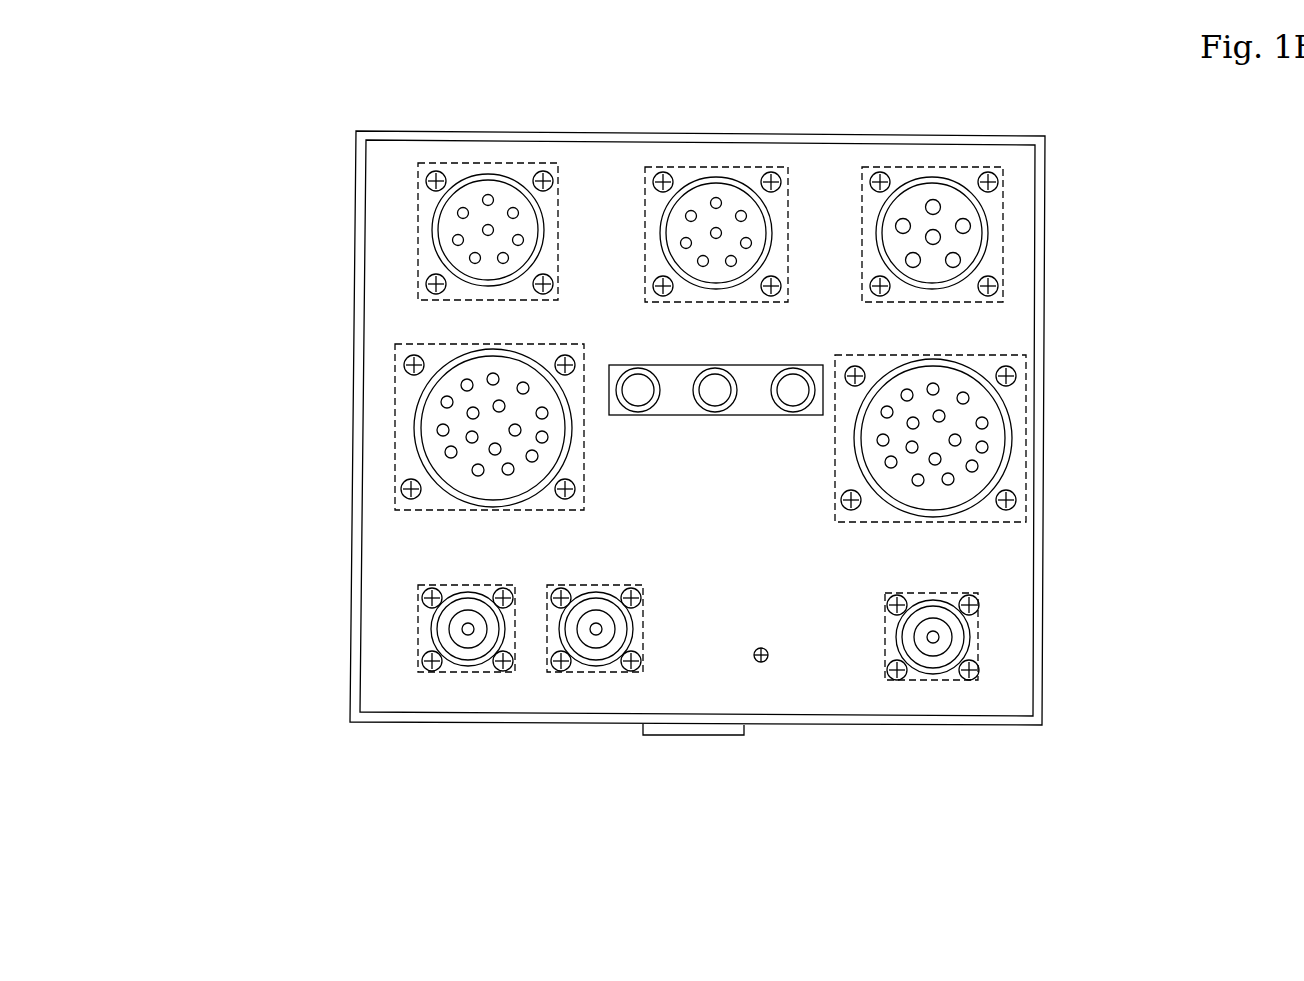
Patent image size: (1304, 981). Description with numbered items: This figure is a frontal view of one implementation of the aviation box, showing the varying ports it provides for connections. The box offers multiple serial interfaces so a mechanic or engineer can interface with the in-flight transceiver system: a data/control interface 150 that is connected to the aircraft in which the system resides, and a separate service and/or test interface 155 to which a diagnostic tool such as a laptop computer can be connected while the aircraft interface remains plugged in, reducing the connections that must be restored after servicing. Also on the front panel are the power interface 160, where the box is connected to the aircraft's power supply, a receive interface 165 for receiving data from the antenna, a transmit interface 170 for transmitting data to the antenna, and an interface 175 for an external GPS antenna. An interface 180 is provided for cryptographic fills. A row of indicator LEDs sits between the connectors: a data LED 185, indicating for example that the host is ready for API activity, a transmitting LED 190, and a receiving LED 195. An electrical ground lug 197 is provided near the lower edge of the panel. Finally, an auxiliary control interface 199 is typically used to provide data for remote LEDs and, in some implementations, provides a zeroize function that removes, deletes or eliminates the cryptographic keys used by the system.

The data/control interface 150 is at (413, 392).
The service and/or test interface 155 is at (733, 177).
The power interface 160 is at (423, 198).
The receive interface 165 is at (425, 612).
The transmit interface 170 is at (580, 670).
The interface for external GPS antenna 175 is at (975, 642).
The interface for cryptographic fills 180 is at (935, 177).
The data indicator LED 185 is at (793, 390).
The transmitting indicator LED 190 is at (720, 398).
The receiving indicator LED 195 is at (645, 398).
The electrical ground lug 197 is at (766, 687).
The auxiliary control interface 199 is at (1008, 402).